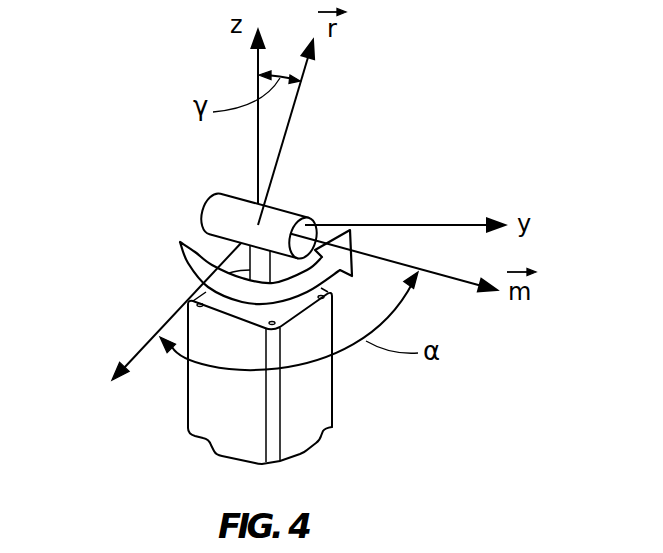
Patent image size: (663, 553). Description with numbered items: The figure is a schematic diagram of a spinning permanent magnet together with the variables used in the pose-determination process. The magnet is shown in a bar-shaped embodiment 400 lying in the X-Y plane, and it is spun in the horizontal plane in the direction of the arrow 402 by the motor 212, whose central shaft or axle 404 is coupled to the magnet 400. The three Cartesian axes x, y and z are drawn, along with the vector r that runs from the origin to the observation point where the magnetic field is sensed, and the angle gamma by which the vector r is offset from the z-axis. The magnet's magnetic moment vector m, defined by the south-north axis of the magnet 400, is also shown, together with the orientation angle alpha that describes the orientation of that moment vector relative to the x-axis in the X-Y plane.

The bar-shaped magnet 400 is at (286, 208).
The arrow 402 is at (197, 282).
The central shaft or axle 404 is at (198, 252).
The motor 212 is at (332, 388).